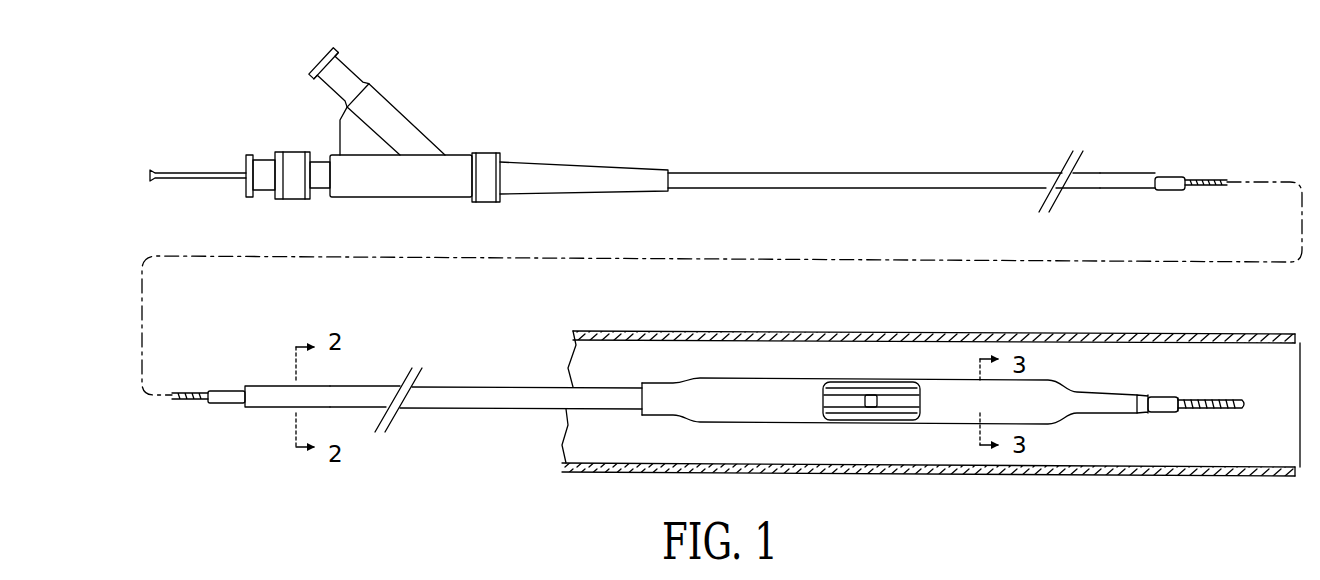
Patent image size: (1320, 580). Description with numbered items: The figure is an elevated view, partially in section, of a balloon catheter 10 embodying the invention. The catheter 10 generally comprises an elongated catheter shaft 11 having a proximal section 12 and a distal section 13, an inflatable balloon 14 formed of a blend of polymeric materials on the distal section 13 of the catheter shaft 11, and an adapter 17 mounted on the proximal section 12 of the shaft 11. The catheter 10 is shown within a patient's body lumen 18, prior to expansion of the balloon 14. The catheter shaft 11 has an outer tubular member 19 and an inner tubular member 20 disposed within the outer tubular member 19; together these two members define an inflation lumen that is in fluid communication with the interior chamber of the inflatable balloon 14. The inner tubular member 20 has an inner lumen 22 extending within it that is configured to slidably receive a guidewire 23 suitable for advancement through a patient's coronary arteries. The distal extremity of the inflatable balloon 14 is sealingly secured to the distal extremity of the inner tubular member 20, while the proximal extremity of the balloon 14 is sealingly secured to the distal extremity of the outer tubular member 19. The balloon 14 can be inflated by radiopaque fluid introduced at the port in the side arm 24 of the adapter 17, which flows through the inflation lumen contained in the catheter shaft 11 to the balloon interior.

The catheter 10 is at (1007, 126).
The catheter shaft 11 is at (913, 189).
The proximal section 12 is at (702, 171).
The distal section 13 is at (551, 385).
The inflatable balloon 14 is at (687, 380).
The adapter 17 is at (335, 155).
The body lumen 18 is at (591, 332).
The outer tubular member 19 is at (1107, 184).
The inner tubular member 20 is at (1173, 177).
The inner lumen 22 is at (1185, 408).
The guidewire 23 is at (221, 172).
The side arm 24 is at (388, 98).